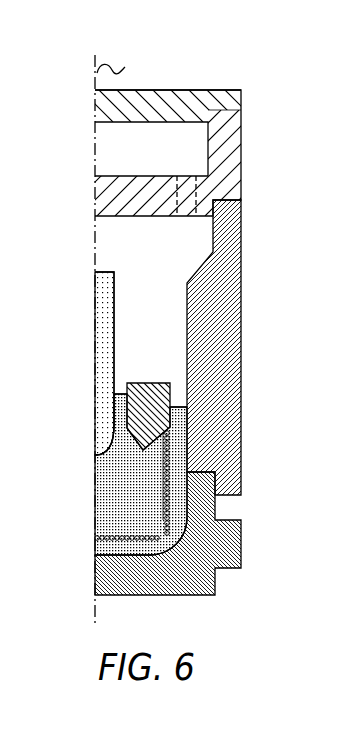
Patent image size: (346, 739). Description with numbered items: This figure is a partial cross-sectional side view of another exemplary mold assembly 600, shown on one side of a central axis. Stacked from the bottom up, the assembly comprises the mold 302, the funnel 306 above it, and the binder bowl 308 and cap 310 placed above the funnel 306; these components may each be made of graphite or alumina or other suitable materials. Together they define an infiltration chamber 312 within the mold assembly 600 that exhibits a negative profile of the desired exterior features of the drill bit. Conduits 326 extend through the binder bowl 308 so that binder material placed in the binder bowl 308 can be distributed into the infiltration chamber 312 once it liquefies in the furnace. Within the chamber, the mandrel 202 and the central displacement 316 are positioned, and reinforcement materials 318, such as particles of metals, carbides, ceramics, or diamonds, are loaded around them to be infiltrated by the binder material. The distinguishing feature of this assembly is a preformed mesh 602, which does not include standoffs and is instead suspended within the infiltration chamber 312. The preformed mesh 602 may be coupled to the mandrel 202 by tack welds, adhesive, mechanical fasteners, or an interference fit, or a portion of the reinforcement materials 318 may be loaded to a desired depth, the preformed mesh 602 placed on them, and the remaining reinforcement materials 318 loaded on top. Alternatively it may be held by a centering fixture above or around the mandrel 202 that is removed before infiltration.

The mold assembly 600 is at (173, 340).
The binder bowl 308 is at (242, 148).
The cap 310 is at (165, 91).
The conduits 326 is at (179, 192).
The infiltration chamber 312 is at (168, 253).
The funnel 306 is at (242, 345).
The central displacement 316 is at (114, 297).
The reinforcement materials 318 is at (107, 484).
The mandrel 202 is at (162, 421).
The mold 302 is at (242, 545).
The preformed mesh 602 is at (161, 544).